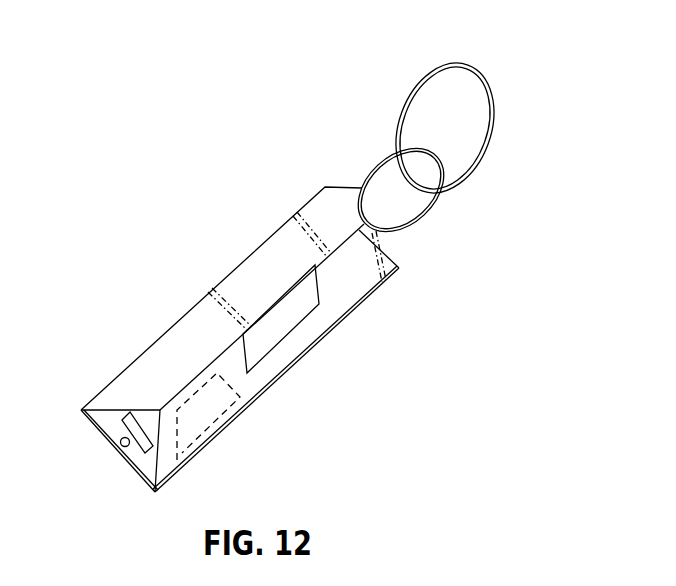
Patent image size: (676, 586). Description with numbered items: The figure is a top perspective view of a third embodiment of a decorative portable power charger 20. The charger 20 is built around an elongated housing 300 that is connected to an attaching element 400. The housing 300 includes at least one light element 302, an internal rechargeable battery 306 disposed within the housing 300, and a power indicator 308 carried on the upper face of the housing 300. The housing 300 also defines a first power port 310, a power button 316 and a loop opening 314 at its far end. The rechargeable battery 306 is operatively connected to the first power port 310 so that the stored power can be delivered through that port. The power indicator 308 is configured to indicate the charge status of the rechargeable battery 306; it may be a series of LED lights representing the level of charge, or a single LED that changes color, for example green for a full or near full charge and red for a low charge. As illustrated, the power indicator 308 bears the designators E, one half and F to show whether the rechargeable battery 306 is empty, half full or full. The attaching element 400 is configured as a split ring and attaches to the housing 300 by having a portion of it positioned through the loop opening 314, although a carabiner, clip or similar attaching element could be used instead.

The decorative portable power charger 20 is at (506, 39).
The housing 300 is at (216, 339).
The light element 302 is at (121, 447).
The internal rechargeable battery 306 is at (246, 420).
The power indicator 308 is at (289, 341).
The first power port 310 is at (128, 416).
The loop opening 314 is at (395, 179).
The power button 316 is at (146, 416).
The attaching element 400 is at (473, 191).